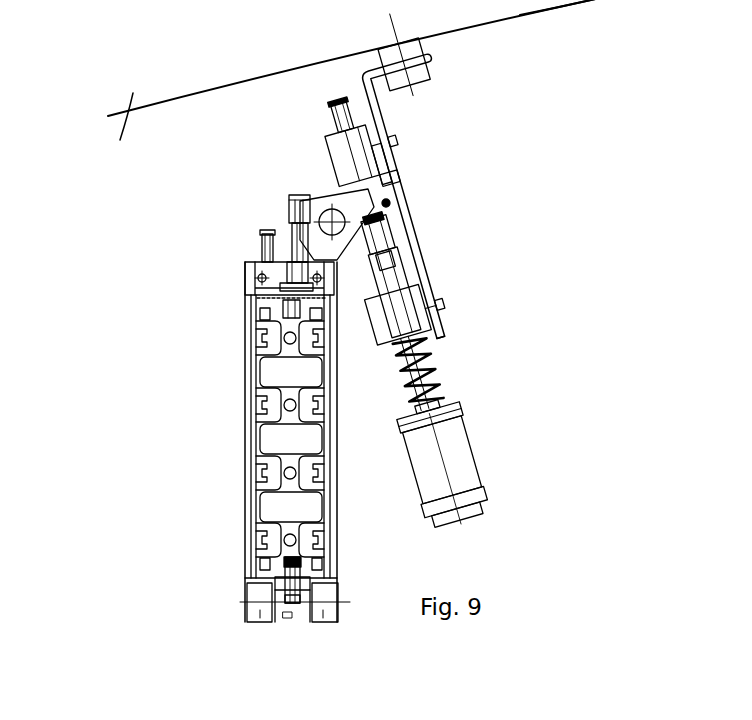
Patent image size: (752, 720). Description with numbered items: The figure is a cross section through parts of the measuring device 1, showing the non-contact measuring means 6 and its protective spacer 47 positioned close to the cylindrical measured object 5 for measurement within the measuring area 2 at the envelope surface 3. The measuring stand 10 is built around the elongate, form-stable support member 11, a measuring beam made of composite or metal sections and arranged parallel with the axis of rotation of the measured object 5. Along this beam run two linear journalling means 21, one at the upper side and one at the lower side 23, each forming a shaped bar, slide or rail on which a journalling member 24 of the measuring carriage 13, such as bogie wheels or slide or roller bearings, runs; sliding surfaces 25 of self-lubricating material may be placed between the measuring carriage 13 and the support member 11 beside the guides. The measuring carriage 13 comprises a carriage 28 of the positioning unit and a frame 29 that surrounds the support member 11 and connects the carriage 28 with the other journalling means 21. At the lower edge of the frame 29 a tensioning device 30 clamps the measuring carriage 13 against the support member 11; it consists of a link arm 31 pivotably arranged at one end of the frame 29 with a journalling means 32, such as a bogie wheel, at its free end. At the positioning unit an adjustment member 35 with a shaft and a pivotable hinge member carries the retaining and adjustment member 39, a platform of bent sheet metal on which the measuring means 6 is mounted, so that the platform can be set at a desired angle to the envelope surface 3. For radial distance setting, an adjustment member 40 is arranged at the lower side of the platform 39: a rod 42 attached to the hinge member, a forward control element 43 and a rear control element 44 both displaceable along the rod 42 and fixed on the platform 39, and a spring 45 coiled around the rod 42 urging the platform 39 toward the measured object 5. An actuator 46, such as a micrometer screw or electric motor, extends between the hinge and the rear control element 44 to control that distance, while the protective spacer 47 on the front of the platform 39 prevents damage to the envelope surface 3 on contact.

The measuring device 1 is at (558, 289).
The measuring area 2 is at (244, 106).
The envelope surface 3 is at (572, 0).
The measured object 5 is at (116, 131).
The measuring means 6 is at (441, 172).
The protective spacer 47 is at (425, 79).
The measuring stand 10 is at (119, 371).
The support member 11 is at (265, 490).
The measuring carriage 13 is at (220, 297).
The linear journalling means 21 is at (258, 276).
The lower side 23 is at (256, 630).
The journalling member 24 is at (338, 287).
The sliding surface 25 is at (250, 317).
The carriage 28 is at (290, 233).
The frame 29 is at (250, 432).
The tensioning device 30 is at (285, 618).
The link arm 31 is at (332, 610).
The journalling means 32 is at (303, 580).
The adjustment member 35 is at (300, 174).
The retaining and adjustment member 39 is at (414, 232).
The adjustment member 40 is at (518, 406).
The rod 42 is at (388, 178).
The forward control element 43 is at (384, 128).
The rear control element 44 is at (410, 297).
The spring 45 is at (440, 386).
The actuator 46 is at (470, 480).